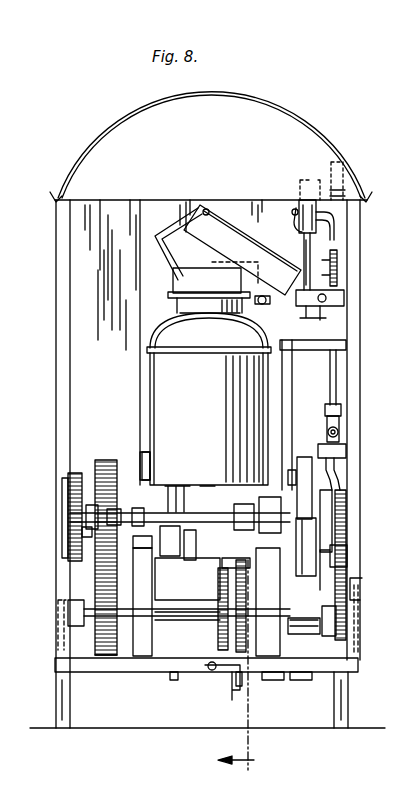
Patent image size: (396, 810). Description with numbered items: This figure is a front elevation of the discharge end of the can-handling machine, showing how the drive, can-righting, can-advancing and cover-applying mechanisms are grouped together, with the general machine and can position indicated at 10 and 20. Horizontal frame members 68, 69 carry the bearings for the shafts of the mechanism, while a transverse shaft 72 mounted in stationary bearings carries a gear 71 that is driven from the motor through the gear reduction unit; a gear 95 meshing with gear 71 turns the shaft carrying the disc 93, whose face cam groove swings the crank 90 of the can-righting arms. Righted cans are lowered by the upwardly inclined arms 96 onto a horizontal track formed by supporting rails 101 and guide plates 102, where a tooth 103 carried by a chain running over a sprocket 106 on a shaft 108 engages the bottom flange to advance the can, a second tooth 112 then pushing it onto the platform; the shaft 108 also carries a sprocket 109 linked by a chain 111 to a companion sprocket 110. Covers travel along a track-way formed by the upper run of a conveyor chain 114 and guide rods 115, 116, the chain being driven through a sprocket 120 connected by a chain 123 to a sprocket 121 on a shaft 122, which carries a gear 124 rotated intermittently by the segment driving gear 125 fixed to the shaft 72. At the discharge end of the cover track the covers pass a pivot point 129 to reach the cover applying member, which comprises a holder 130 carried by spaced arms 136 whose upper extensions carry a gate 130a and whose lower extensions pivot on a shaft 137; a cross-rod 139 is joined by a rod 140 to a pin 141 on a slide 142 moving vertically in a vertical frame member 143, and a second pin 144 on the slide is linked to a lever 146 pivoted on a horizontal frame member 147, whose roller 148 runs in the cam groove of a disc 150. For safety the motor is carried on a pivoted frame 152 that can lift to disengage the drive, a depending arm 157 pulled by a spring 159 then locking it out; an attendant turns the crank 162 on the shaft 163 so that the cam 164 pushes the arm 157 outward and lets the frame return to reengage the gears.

The axis line 10 is at (244, 568).
The bottle 20 is at (152, 374).
The horizontal frame member 68 is at (268, 602).
The horizontal frame member 69 is at (143, 551).
The gear 71 is at (106, 672).
The transverse shaft 72 is at (160, 604).
The crank 90 is at (296, 492).
The disc 93 is at (351, 521).
The gear 95 is at (108, 462).
The upwardly inclined arms 96 is at (170, 541).
The supporting rails 101 is at (178, 490).
The guide plates 102 is at (150, 456).
The tooth 103 is at (208, 486).
The sprocket 106 is at (200, 548).
The shaft 108 is at (96, 540).
The sprocket 109 is at (70, 533).
The sprocket 110 is at (72, 478).
The chain 111 is at (66, 490).
The second tooth 112 is at (190, 568).
The conveyor chain 114 is at (320, 258).
The guide rod 115 is at (290, 206).
The guide rods 116 is at (338, 185).
The sprocket 120 is at (340, 268).
The sprocket 121 is at (330, 640).
The shaft 122 is at (292, 634).
The chain 123 is at (332, 366).
The gear 124 is at (216, 656).
The segment driving gear 125 is at (212, 609).
The pivot 129 is at (211, 195).
The holder 130 is at (262, 228).
The gate 130a is at (168, 258).
The spaced arms 136 is at (240, 248).
The shaft 137 is at (272, 300).
The cross-rod 139 is at (328, 300).
The rod 140 is at (340, 374).
The pin 141 is at (340, 432).
The slide 142 is at (346, 454).
The vertical frame member 143 is at (345, 390).
The second pin 144 is at (322, 444).
The lever 146 is at (347, 553).
The horizontal frame member 147 is at (356, 592).
The roller 148 is at (320, 586).
The disc 150 is at (346, 506).
The frame 152 is at (292, 683).
The depending arm 157 is at (254, 690).
The spring 159 is at (200, 682).
The crank 162 is at (78, 648).
The shaft 163 is at (78, 606).
The cam 164 is at (174, 680).